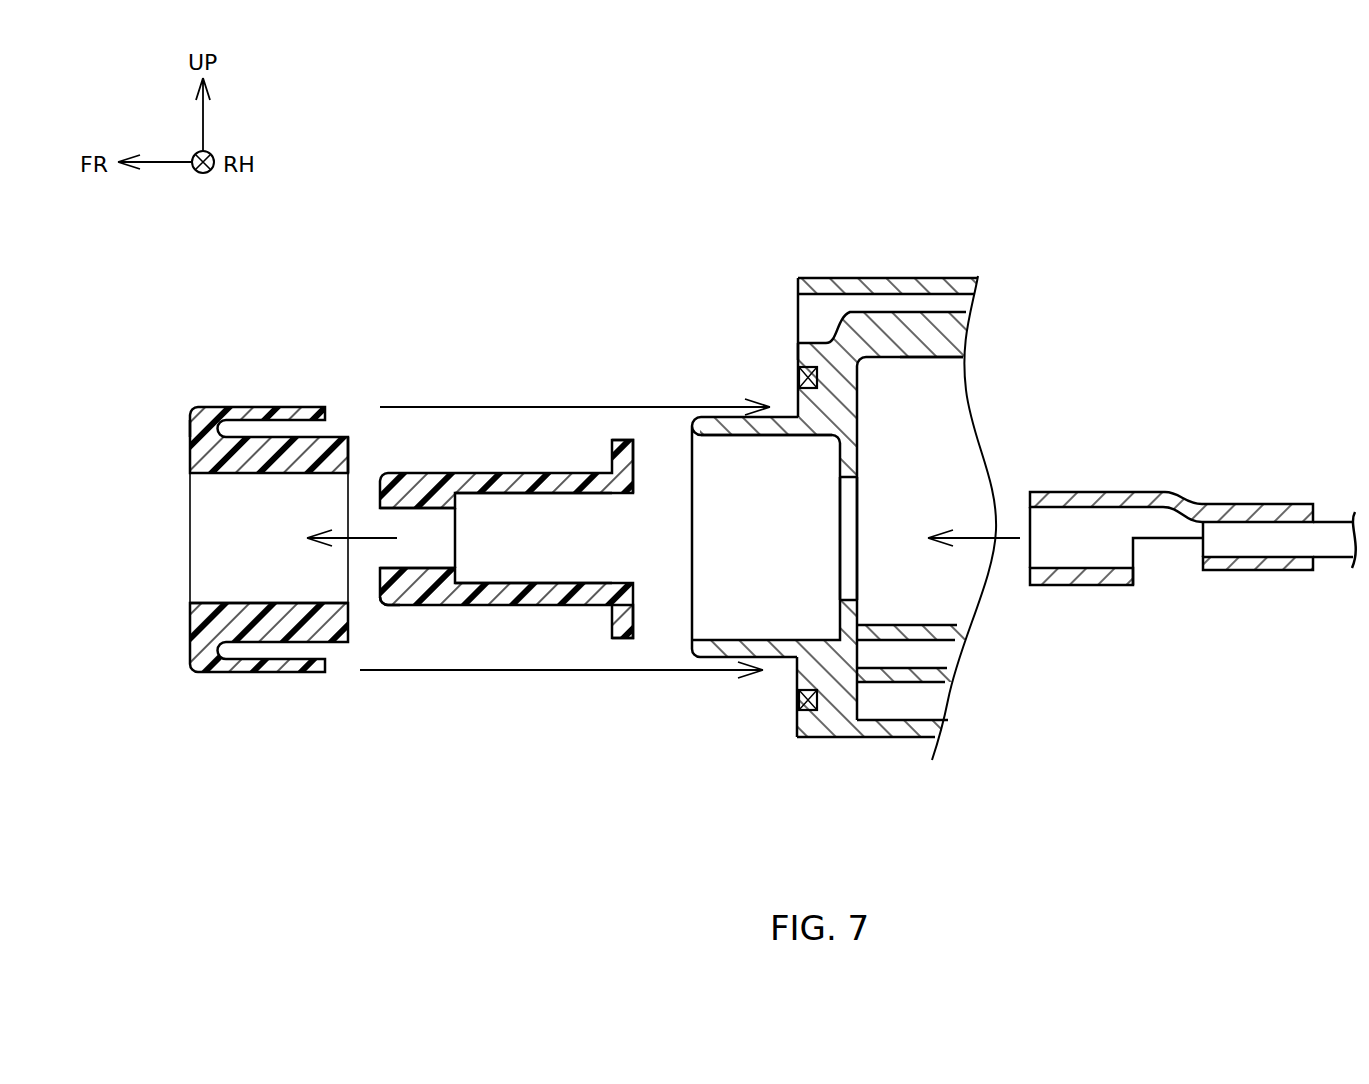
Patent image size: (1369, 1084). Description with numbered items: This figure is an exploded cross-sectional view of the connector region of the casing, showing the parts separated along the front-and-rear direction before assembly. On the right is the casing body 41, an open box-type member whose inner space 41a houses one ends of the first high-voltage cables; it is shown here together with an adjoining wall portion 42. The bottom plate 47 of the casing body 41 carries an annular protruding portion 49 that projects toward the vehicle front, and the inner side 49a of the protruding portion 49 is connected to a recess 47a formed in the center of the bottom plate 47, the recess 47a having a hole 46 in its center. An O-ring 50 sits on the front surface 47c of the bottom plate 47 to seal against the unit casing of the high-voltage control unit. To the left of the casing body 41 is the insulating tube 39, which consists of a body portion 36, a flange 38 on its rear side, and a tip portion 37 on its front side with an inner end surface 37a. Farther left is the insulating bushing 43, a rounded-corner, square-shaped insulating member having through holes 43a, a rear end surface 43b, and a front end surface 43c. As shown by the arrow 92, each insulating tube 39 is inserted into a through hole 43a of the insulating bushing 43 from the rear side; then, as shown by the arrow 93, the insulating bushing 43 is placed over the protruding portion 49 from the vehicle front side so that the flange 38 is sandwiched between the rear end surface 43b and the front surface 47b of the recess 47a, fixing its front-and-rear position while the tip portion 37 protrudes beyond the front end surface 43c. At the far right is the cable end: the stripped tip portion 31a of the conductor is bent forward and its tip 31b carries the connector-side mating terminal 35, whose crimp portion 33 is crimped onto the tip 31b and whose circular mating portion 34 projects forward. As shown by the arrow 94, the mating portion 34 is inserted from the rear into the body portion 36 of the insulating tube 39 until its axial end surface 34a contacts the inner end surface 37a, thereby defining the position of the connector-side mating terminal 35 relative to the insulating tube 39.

The tip portion 31a is at (1335, 560).
The tip 31b is at (1232, 572).
The crimp portion 33 is at (1280, 551).
The mating portion 34 is at (1165, 556).
The axial end surface 34a is at (1031, 580).
The connector-side mating terminal 35 is at (1188, 535).
The body portion 36 is at (498, 605).
The tip portion 37 is at (407, 605).
The inner end surface 37a is at (388, 600).
The flange 38 is at (622, 638).
The insulating tube 39 is at (484, 631).
The casing body 41 is at (955, 327).
The inner space 41a is at (962, 362).
The bracket 42 is at (922, 278).
The insulating bushing 43 is at (210, 525).
The through hole 43a is at (220, 603).
The rear end surface 43b is at (350, 457).
The front end surface 43c is at (190, 436).
The hole 46 is at (852, 492).
The bottom plate 47 is at (860, 422).
The recess 47a is at (800, 452).
The front surface 47b is at (750, 450).
The front surface 47c is at (797, 347).
The protruding portion 49 is at (718, 427).
The inner side 49a is at (700, 452).
The O-ring 50 is at (797, 377).
The arrow 92 is at (360, 538).
The arrow 93 is at (522, 407).
The arrow 94 is at (1002, 540).